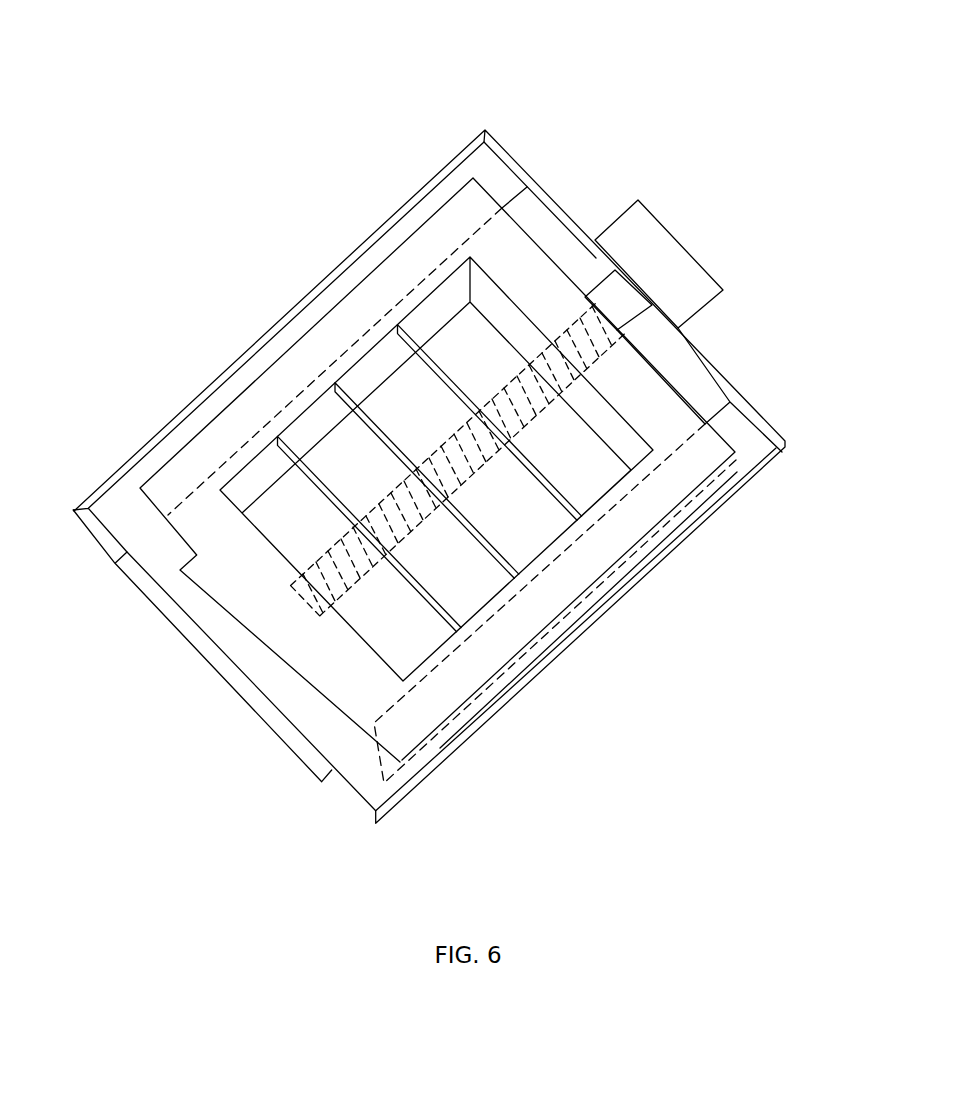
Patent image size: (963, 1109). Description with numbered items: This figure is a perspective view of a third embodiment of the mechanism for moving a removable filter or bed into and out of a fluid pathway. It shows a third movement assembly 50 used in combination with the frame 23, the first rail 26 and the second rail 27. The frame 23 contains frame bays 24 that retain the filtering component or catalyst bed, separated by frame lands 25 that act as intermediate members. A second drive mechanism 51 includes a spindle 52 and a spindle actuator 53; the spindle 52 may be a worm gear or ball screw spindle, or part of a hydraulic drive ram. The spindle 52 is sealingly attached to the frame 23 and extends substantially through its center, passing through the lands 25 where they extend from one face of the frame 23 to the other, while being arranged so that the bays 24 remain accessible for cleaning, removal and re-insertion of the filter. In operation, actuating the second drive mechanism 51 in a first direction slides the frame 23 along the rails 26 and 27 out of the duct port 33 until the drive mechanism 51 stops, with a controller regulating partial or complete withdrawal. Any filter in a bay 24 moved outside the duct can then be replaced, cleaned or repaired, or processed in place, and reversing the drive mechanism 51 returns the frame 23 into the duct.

The third movement assembly 50 is at (370, 82).
The frame 23 is at (513, 260).
The spindle 52 is at (650, 213).
The second drive mechanism 51 is at (710, 245).
The spindle actuator 53 is at (632, 325).
The first rail 26 is at (127, 495).
The second rail 27 is at (742, 443).
The duct port 33 is at (307, 768).
The frame bay 24 is at (418, 635).
The frame land 25 is at (640, 583).